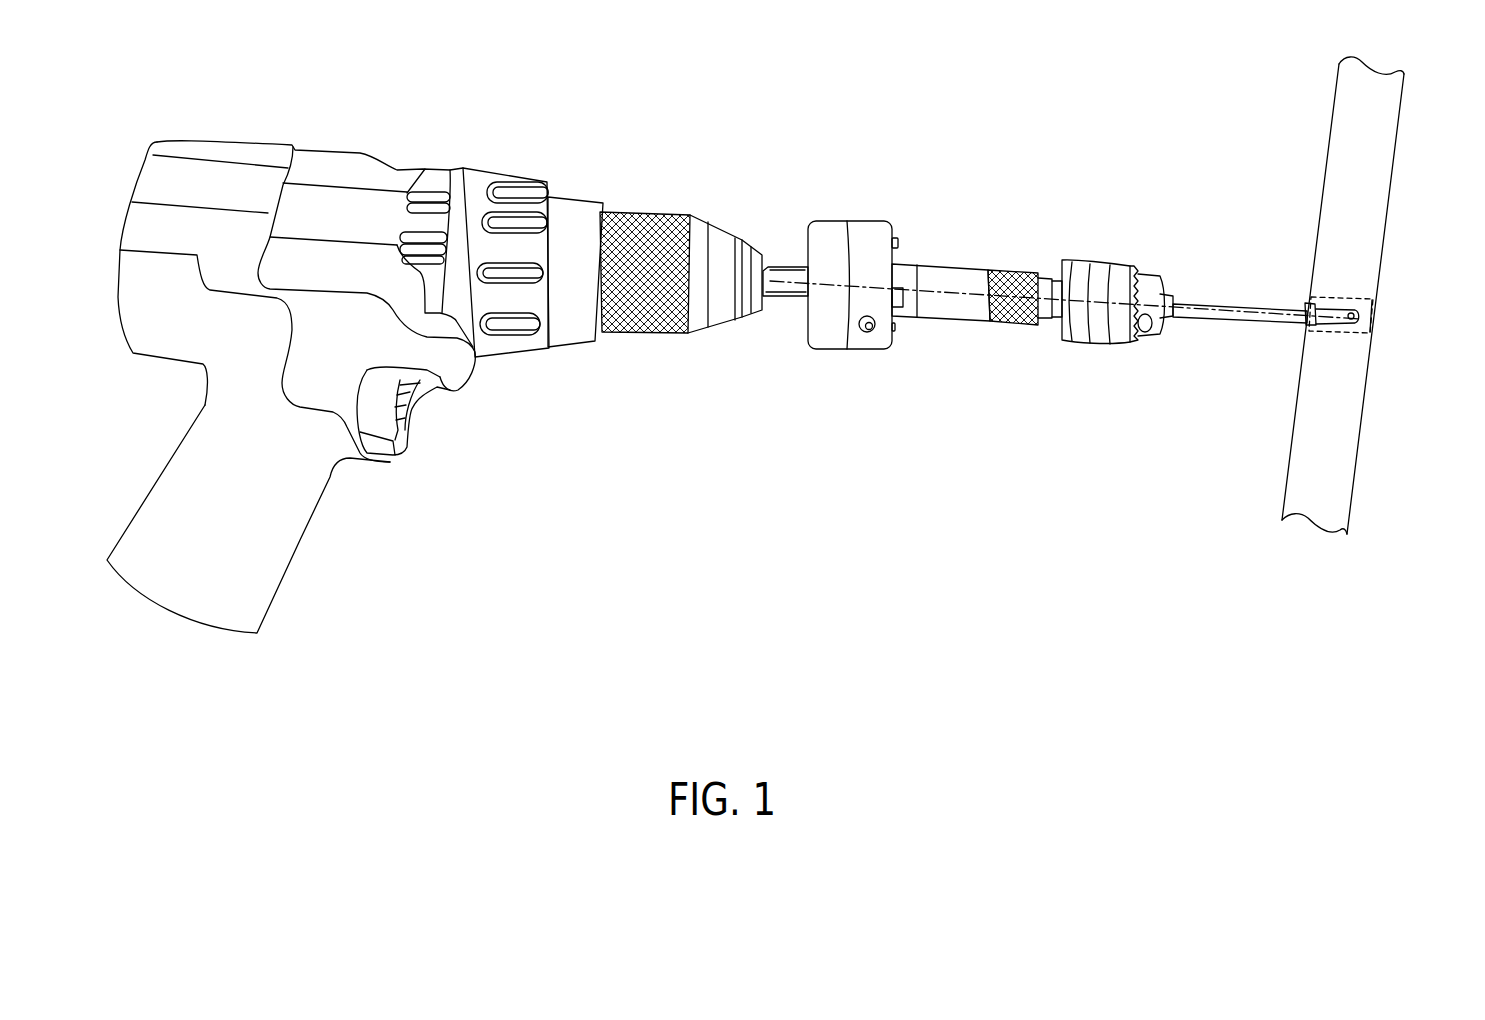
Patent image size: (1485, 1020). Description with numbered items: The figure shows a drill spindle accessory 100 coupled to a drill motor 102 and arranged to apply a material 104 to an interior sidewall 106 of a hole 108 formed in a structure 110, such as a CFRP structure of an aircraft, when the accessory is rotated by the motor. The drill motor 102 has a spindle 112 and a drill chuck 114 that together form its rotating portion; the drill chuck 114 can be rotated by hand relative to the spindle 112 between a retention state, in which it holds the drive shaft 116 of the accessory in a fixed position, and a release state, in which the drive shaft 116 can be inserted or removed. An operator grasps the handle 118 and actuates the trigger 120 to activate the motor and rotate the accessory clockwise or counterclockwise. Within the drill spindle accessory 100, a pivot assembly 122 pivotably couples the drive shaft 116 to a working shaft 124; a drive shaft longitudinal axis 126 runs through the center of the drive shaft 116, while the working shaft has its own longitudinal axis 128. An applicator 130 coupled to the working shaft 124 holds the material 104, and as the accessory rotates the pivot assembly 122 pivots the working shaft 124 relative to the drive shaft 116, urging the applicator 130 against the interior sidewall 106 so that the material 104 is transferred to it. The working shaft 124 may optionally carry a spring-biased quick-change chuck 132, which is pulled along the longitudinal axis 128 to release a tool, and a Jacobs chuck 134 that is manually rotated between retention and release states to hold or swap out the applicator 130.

The drill spindle accessory 100 is at (995, 146).
The drill motor 102 is at (258, 141).
The material 104 is at (1336, 297).
The interior sidewall 106 is at (1348, 342).
The hole 108 is at (1378, 318).
The structure 110 is at (1387, 222).
The spindle 112 is at (663, 210).
The drill chuck 114 is at (766, 264).
The drive shaft 116 is at (792, 298).
The handle 118 is at (163, 472).
The trigger 120 is at (390, 463).
The pivot assembly 122 is at (852, 372).
The working shaft 124 is at (968, 262).
The drive shaft longitudinal axis 126 is at (779, 267).
The longitudinal axis of the working shaft 128 is at (962, 294).
The applicator 130 is at (1268, 320).
The quick-change chuck 132 is at (1007, 327).
The Jacobs chuck 134 is at (1145, 262).